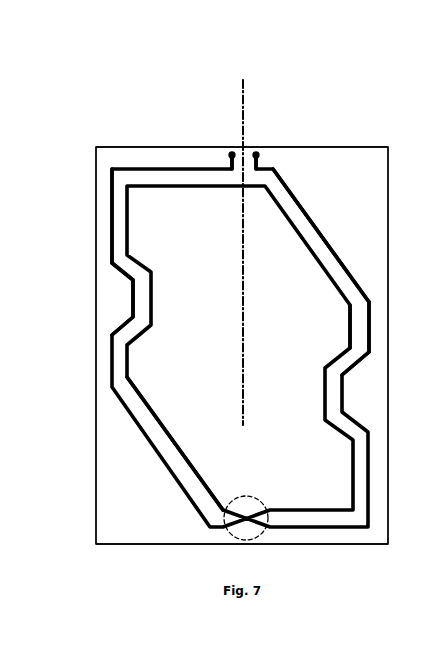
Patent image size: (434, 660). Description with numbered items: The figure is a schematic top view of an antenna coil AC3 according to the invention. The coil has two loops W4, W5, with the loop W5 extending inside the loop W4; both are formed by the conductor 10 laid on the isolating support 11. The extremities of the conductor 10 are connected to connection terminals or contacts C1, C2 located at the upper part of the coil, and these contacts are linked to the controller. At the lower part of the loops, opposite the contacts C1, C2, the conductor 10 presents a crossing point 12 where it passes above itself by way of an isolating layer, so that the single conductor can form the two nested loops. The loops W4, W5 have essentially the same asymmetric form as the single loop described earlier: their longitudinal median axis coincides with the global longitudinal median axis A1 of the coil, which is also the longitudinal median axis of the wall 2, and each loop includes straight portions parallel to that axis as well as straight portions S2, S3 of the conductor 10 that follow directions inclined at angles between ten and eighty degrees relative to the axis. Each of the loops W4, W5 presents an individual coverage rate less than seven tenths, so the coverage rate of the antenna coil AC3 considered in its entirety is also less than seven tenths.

The wall 2 is at (94, 344).
The isolating support 11 is at (242, 345).
The conductor 10 is at (140, 169).
The crossing point 12 is at (248, 496).
The connection terminal C1 is at (232, 155).
The connection terminal C2 is at (258, 155).
The global longitudinal median axis A1 is at (245, 103).
The antenna coil AC3 is at (111, 210).
The straight portion S2 is at (317, 228).
The straight portion S3 is at (120, 273).
The loop W4 is at (371, 320).
The loop W5 is at (349, 335).